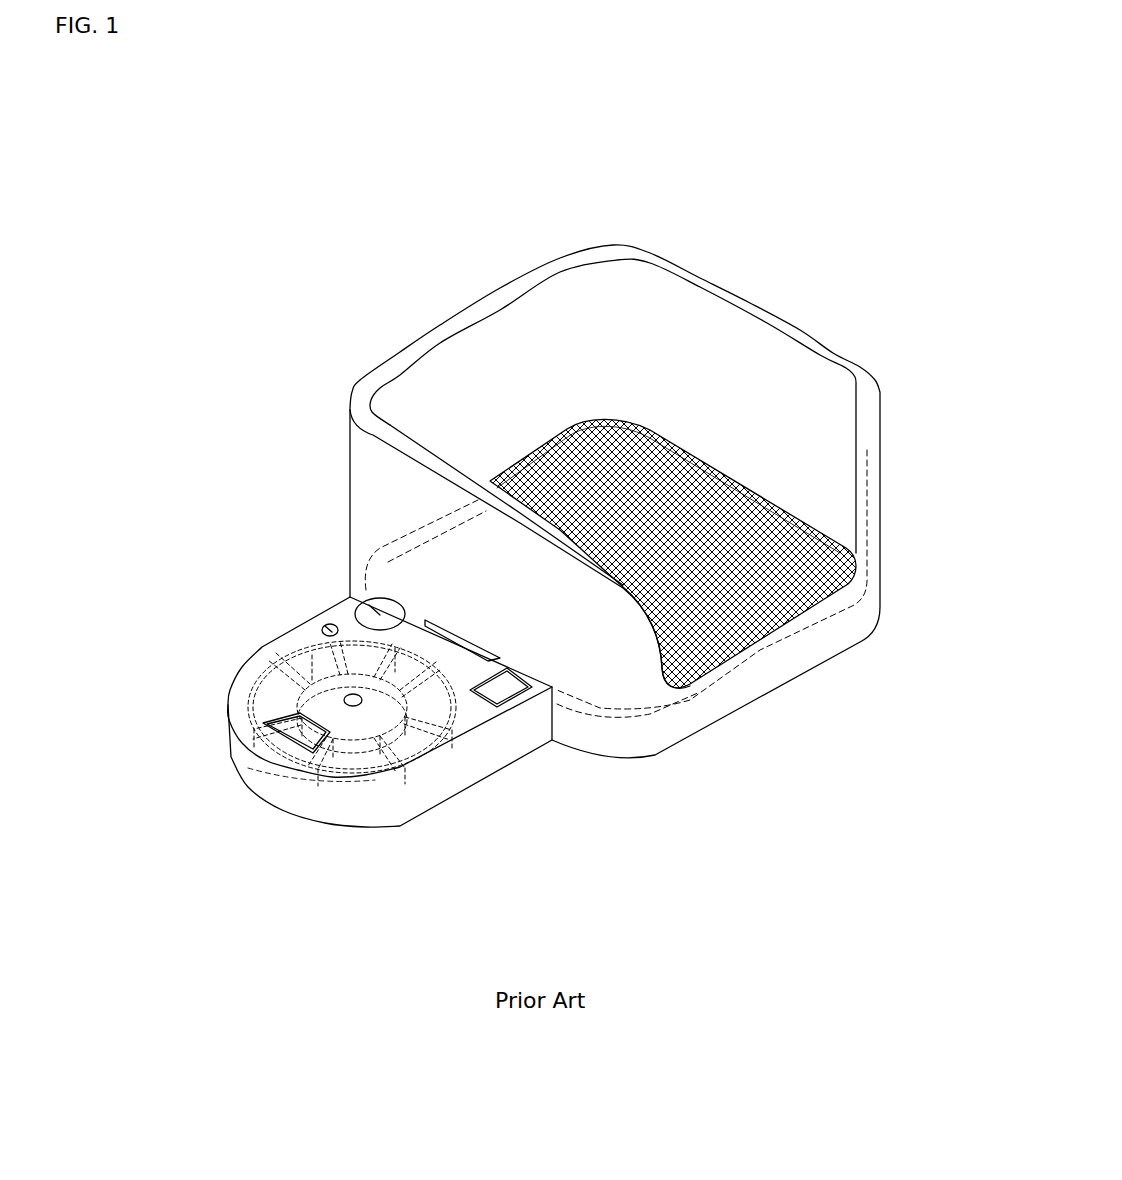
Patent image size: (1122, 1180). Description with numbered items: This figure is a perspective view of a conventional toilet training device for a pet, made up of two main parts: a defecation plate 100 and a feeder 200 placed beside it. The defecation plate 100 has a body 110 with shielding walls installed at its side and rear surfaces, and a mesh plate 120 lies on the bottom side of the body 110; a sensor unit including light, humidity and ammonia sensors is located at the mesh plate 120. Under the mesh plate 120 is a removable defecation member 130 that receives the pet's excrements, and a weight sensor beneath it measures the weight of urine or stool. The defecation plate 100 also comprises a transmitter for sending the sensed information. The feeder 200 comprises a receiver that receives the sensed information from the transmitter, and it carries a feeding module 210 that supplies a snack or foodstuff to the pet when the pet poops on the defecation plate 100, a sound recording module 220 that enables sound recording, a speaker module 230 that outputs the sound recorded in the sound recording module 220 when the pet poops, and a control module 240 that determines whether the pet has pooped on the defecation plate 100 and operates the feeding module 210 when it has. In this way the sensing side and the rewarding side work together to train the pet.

The defecation plate 100 is at (608, 428).
The body 110 is at (705, 273).
The mesh plate 120 is at (750, 490).
The removable defecation member 130 is at (437, 566).
The feeder 200 is at (359, 675).
The feeding module 210 is at (300, 712).
The sound recording module 220 is at (322, 626).
The speaker module 230 is at (356, 600).
The control module 240 is at (512, 688).